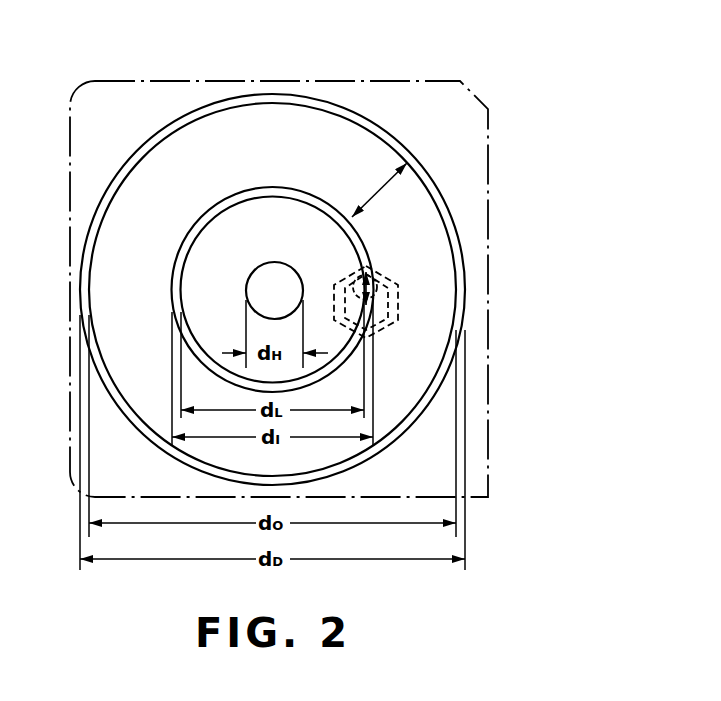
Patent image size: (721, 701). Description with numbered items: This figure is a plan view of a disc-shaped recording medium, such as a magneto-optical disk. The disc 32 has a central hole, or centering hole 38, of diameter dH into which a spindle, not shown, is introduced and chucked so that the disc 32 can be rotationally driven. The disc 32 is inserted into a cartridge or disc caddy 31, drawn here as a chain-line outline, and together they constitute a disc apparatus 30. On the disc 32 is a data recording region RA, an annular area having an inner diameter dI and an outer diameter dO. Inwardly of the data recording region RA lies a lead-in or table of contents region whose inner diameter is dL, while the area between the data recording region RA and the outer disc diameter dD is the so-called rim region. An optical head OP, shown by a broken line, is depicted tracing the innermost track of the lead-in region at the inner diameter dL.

The disc apparatus 30 is at (128, 70).
The cartridge 31 is at (424, 91).
The disc 32 is at (212, 104).
The centering hole 38 is at (252, 284).
The data recording region RA is at (380, 190).
The optical head OP is at (397, 297).